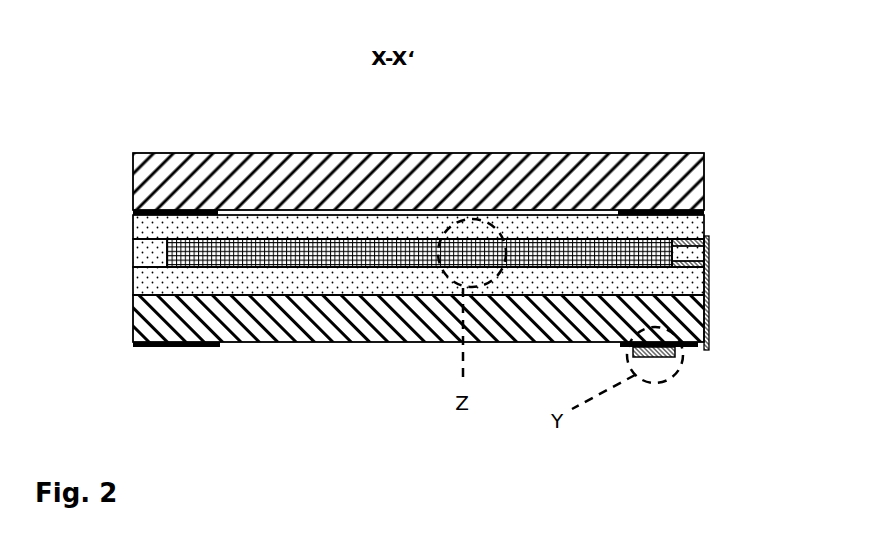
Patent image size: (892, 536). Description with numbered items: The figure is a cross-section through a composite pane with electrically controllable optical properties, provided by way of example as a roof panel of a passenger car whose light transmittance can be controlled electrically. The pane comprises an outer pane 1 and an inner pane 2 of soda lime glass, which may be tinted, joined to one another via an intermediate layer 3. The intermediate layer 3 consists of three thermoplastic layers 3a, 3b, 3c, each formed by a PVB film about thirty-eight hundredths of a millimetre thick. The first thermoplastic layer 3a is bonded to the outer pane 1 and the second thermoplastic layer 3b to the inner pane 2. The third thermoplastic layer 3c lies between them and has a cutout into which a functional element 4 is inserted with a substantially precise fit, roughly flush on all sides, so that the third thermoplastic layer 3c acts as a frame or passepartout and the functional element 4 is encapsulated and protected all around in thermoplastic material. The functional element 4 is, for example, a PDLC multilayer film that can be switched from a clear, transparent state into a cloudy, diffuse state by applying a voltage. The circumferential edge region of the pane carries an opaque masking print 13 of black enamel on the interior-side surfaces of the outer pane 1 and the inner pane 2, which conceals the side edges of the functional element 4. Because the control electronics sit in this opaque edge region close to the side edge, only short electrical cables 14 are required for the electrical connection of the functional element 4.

The outer pane 1 is at (145, 158).
The inner pane 2 is at (209, 333).
The intermediate layer 3 is at (362, 267).
The first thermoplastic layer 3a is at (142, 228).
The second thermoplastic layer 3b is at (147, 285).
The third thermoplastic layer 3c is at (160, 247).
The functional element 4 is at (673, 247).
The masking print 13 is at (153, 346).
The electrical cables 14 is at (709, 288).